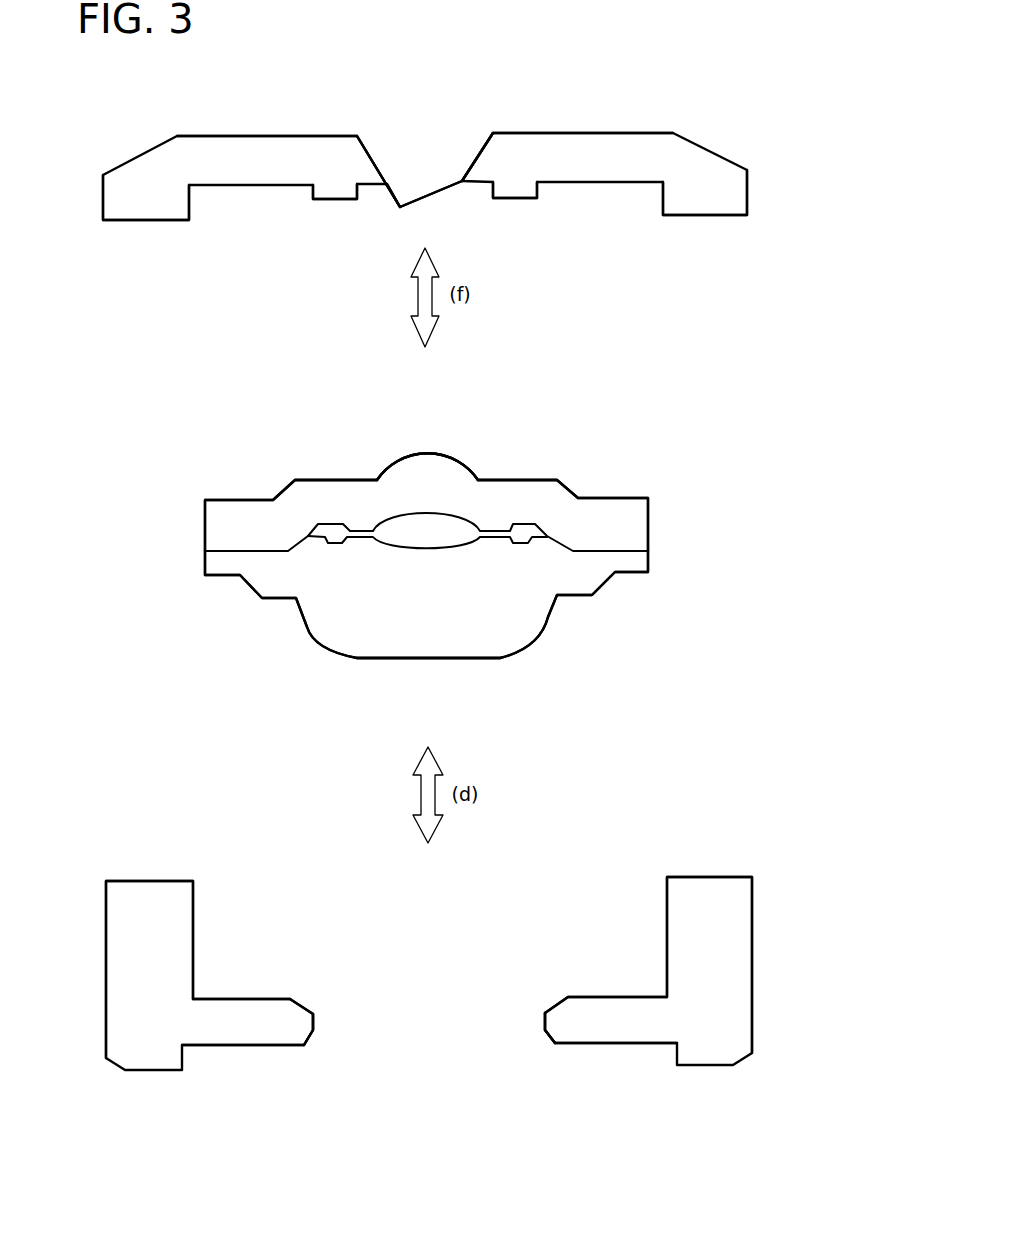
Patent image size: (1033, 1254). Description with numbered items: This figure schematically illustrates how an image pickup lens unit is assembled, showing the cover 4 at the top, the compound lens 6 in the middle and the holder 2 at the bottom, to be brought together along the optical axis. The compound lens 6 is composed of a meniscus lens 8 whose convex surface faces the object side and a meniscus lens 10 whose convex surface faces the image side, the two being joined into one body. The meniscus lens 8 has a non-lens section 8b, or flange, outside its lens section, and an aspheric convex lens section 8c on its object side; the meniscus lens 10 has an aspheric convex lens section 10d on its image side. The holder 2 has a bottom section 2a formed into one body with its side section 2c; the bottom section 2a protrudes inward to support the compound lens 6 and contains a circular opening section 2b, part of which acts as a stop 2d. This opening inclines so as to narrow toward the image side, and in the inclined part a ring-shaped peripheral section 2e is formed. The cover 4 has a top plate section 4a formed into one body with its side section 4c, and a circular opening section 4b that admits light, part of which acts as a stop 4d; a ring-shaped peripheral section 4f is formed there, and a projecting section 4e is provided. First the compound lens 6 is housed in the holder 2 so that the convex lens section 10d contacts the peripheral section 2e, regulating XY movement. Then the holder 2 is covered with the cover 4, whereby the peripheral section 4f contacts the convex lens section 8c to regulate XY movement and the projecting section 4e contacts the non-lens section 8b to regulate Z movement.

The holder 2 is at (764, 877).
The bottom section 2a is at (585, 1066).
The opening section 2b is at (530, 1060).
The side section 2c is at (720, 923).
The stop 2d is at (429, 1064).
The peripheral section 2e is at (545, 1013).
The cover 4 is at (756, 132).
The top plate section 4a is at (608, 158).
The opening section 4b is at (477, 148).
The side section 4c is at (718, 235).
The stop 4d is at (434, 146).
The projecting section 4e is at (573, 237).
The peripheral section 4f is at (423, 206).
The compound lens 6 is at (736, 452).
The meniscus lens 8 is at (667, 452).
The non-lens section 8b is at (528, 478).
The convex lens section 8c is at (430, 452).
The meniscus lens 10 is at (667, 555).
The convex lens section 10d is at (450, 662).